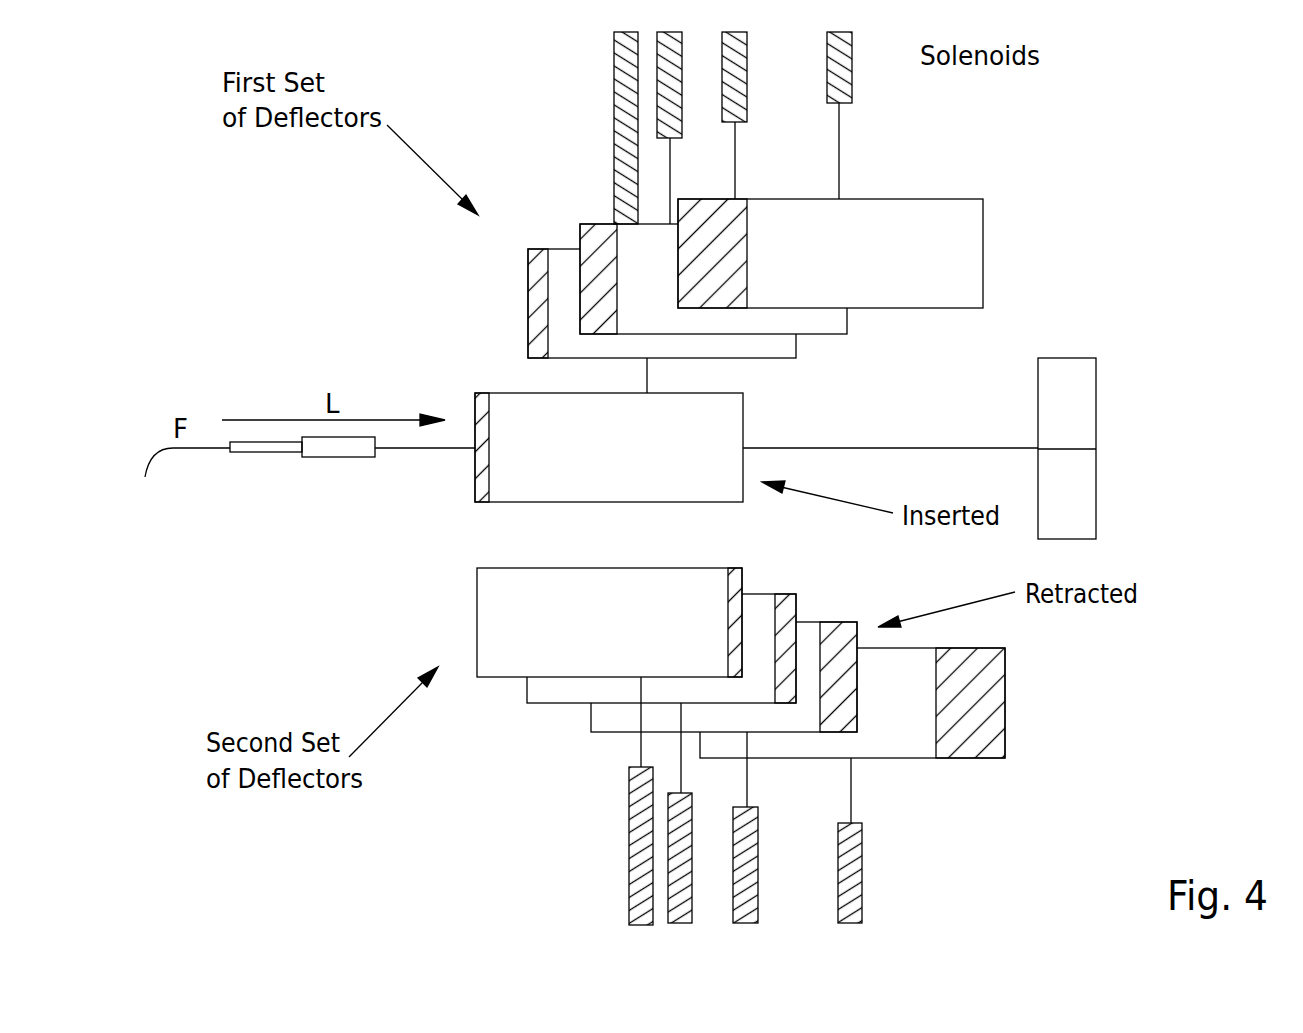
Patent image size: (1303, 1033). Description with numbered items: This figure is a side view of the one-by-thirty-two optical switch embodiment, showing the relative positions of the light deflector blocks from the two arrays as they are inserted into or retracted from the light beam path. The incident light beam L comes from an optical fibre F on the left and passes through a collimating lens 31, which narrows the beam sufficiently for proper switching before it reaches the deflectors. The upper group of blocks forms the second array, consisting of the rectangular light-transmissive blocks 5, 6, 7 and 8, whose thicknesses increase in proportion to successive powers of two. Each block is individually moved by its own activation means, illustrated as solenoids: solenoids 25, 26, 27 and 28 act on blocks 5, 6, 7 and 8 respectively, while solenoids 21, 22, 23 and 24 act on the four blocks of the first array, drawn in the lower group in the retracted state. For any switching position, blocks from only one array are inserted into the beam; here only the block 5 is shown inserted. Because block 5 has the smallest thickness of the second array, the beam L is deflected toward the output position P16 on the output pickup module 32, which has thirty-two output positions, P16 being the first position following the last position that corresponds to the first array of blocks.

The light deflector block 5 is at (550, 496).
The light deflector block 6 is at (780, 353).
The light deflector block 7 is at (832, 318).
The light deflector block 8 is at (947, 252).
The activation means 21 is at (635, 777).
The activation means 22 is at (673, 807).
The activation means 23 is at (757, 827).
The activation means 24 is at (860, 882).
The activation means 25 is at (622, 50).
The activation means 26 is at (665, 63).
The activation means 27 is at (747, 60).
The activation means 28 is at (842, 43).
The collimating lens 31 is at (337, 448).
The output pickup module 32 is at (1085, 400).
The output position P16 is at (1094, 451).